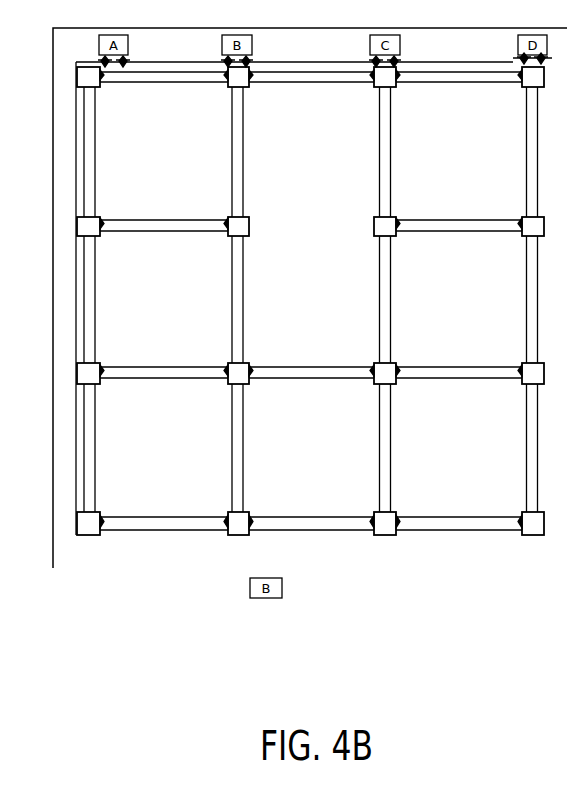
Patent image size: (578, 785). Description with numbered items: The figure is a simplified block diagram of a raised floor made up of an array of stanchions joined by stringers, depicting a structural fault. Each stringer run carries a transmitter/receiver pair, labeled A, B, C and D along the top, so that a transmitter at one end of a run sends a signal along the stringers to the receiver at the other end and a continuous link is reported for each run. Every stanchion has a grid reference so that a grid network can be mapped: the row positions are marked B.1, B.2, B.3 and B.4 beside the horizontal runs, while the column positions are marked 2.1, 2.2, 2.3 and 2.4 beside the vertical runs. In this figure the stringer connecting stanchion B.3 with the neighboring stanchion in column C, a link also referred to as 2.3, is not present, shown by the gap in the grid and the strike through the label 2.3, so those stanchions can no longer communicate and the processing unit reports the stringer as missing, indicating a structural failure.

The stanchion grid reference 2.1 is at (63, 299).
The stanchion grid reference 2.2 is at (211, 299).
The stanchion grid reference 2.3 is at (367, 268).
The stanchion grid reference 2.4 is at (517, 272).
The stanchion grid reference B.1 is at (310, 542).
The stanchion grid reference B.2 is at (310, 390).
The stanchion B.3 is at (310, 243).
The stanchion grid reference B.4 is at (310, 93).